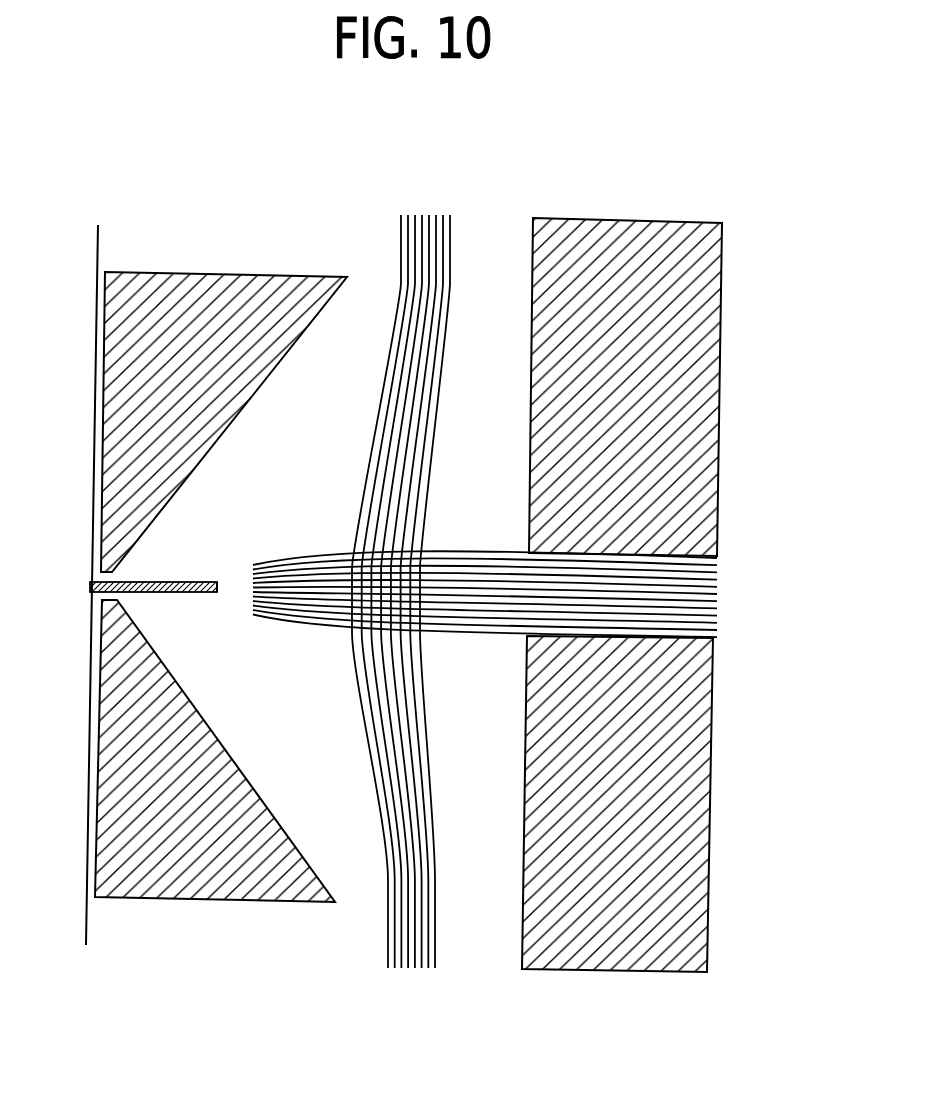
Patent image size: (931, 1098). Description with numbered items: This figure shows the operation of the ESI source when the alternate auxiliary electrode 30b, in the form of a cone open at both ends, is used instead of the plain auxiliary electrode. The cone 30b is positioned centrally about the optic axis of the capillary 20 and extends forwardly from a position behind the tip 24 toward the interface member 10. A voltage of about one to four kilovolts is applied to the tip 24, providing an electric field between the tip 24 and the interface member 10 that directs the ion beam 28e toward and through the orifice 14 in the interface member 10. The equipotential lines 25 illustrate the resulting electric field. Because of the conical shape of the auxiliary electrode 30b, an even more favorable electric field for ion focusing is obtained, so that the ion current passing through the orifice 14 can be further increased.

The interface member 10 is at (740, 370).
The orifice 14 is at (740, 584).
The capillary 20 is at (180, 570).
The tip 24 is at (216, 598).
The equipotential lines 25 is at (428, 212).
The ion beam 28e is at (483, 552).
The auxiliary electrode 30b is at (211, 270).